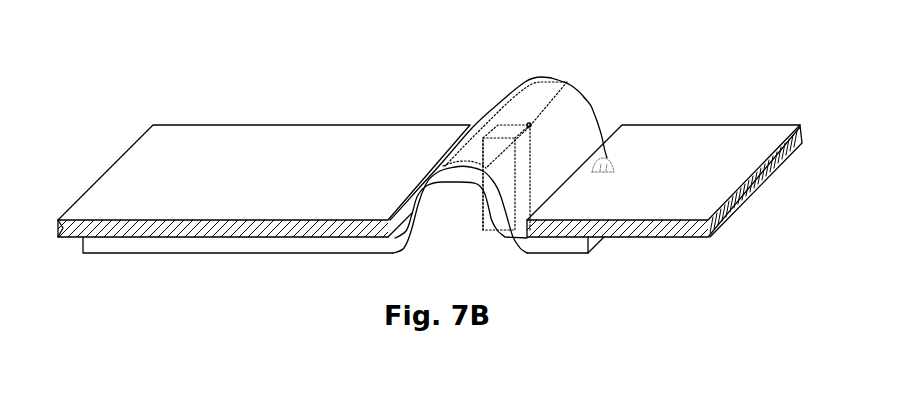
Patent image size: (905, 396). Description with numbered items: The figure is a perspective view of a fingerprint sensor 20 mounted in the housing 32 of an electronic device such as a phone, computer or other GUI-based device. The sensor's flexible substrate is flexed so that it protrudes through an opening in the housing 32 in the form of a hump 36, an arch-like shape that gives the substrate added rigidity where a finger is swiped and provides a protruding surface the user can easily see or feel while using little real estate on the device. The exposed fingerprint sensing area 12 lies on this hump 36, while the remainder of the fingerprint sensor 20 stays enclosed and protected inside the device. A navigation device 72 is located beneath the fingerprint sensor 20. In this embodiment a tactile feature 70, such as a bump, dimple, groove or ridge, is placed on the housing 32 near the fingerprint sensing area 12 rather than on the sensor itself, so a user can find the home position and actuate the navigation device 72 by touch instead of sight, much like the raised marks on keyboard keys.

The fingerprint sensing area 12 is at (551, 77).
The fingerprint sensor 20 is at (325, 278).
The housing 32 is at (245, 145).
The hump 36 is at (432, 182).
The tactile feature 70 is at (608, 160).
The navigation device 72 is at (492, 222).